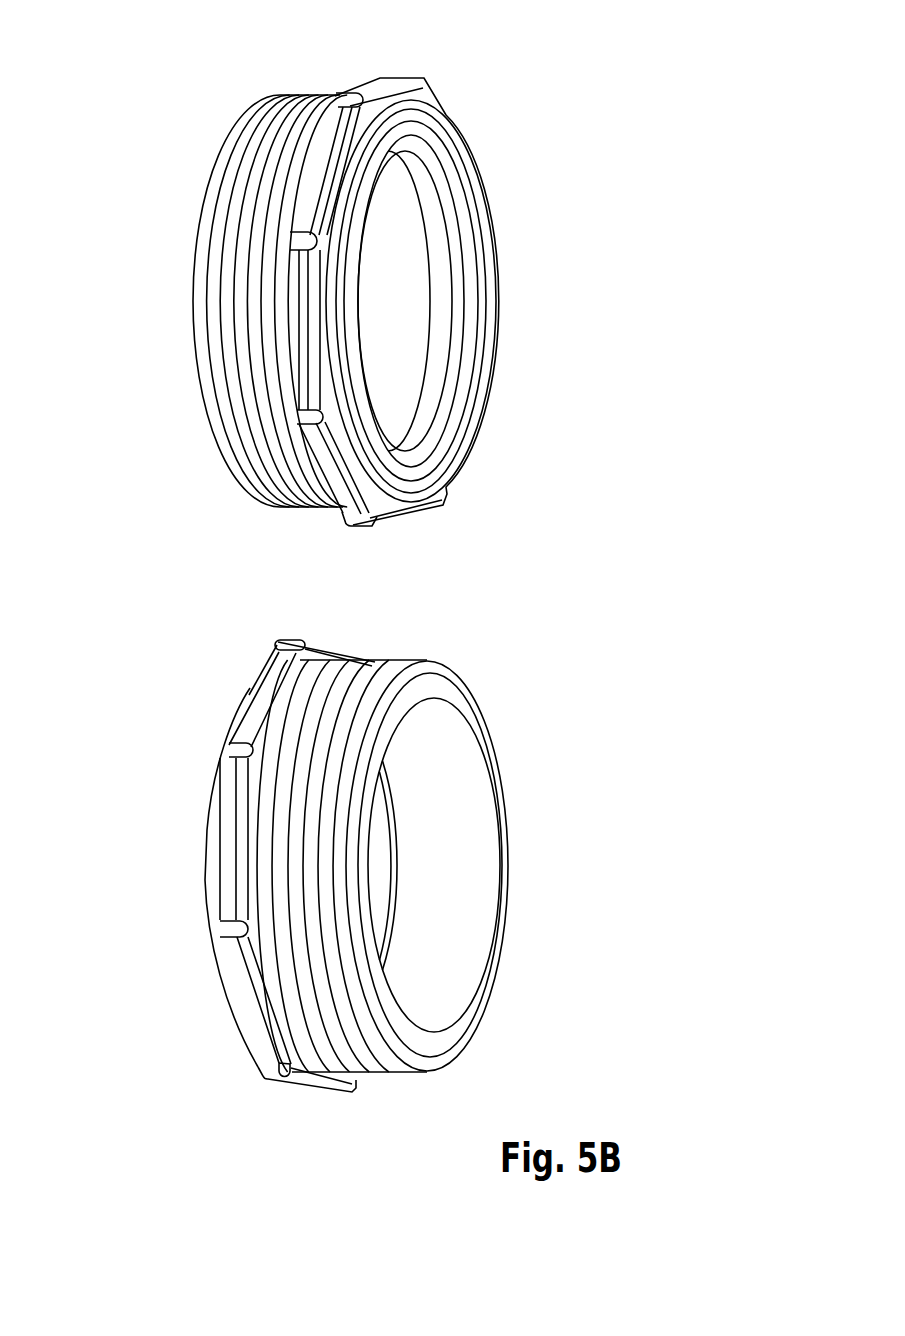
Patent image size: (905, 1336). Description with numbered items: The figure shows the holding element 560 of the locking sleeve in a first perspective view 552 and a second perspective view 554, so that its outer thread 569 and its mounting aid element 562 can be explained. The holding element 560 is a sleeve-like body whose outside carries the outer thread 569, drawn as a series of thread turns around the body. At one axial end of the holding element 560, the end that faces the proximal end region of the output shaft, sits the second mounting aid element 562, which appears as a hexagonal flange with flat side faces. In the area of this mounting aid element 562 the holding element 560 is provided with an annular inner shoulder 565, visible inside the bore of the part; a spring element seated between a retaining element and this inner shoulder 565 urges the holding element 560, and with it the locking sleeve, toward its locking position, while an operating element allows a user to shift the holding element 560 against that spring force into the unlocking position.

The first perspective view 552 is at (178, 75).
The second perspective view 554 is at (551, 670).
The holding element 560 is at (156, 151).
The second mounting aid element 562 is at (377, 66).
The annular inner shoulder 565 is at (418, 270).
The outer thread 569 is at (229, 242).